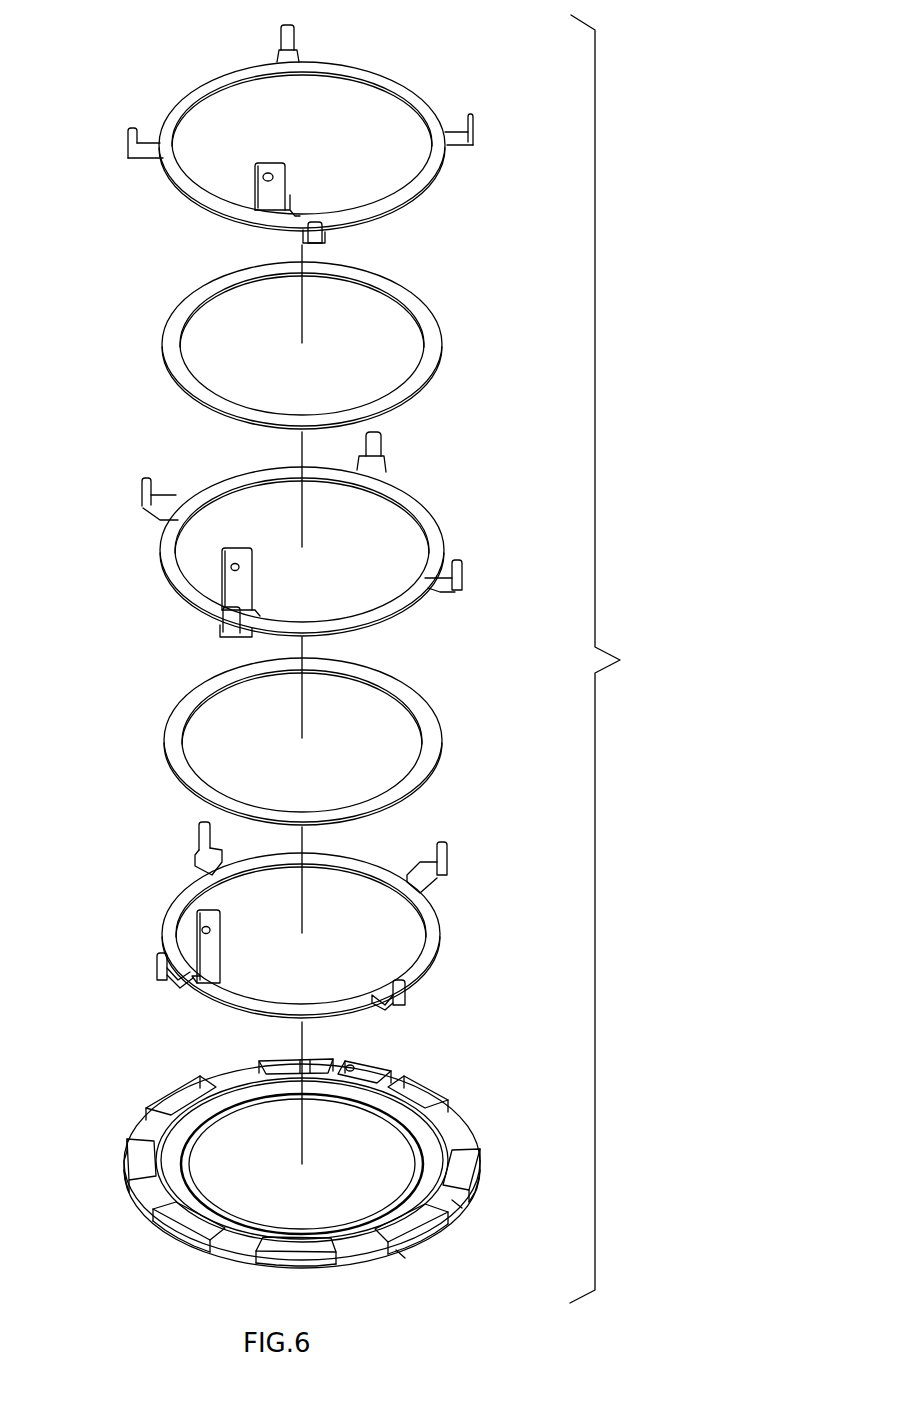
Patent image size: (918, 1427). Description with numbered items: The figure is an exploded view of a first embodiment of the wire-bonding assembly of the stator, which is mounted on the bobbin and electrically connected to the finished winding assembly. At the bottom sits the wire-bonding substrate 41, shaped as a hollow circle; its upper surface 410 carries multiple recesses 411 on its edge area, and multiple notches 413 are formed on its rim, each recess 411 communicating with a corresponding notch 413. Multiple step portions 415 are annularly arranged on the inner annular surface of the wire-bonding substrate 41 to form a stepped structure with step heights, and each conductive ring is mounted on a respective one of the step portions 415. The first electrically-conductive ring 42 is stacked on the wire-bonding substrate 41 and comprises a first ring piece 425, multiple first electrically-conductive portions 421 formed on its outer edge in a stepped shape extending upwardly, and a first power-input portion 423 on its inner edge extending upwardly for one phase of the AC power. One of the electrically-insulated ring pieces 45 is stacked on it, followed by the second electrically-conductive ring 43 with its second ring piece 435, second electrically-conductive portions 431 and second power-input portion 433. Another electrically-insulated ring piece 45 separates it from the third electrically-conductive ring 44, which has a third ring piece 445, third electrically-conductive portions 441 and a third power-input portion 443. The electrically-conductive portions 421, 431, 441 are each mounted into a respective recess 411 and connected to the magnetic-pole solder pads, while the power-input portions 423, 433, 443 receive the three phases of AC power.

The wire-bonding substrate 41 is at (152, 1195).
The upper surface 410 is at (458, 1128).
The recesses 411 is at (283, 1068).
The notches 413 is at (458, 1207).
The step portions 415 is at (410, 1097).
The first electrically-conductive ring 42 is at (146, 910).
The first electrically-conductive portions 421 is at (200, 832).
The first power-input portion 423 is at (210, 955).
The first ring piece 425 is at (432, 932).
The second electrically-conductive ring 43 is at (146, 574).
The second electrically-conductive portions 431 is at (378, 445).
The second power-input portion 433 is at (232, 585).
The second ring piece 435 is at (418, 510).
The third electrically-conductive ring 44 is at (168, 76).
The third electrically-conductive portions 441 is at (290, 36).
The third power-input portion 443 is at (280, 190).
The third ring piece 445 is at (405, 95).
The electrically-insulated ring pieces 45 is at (190, 305).